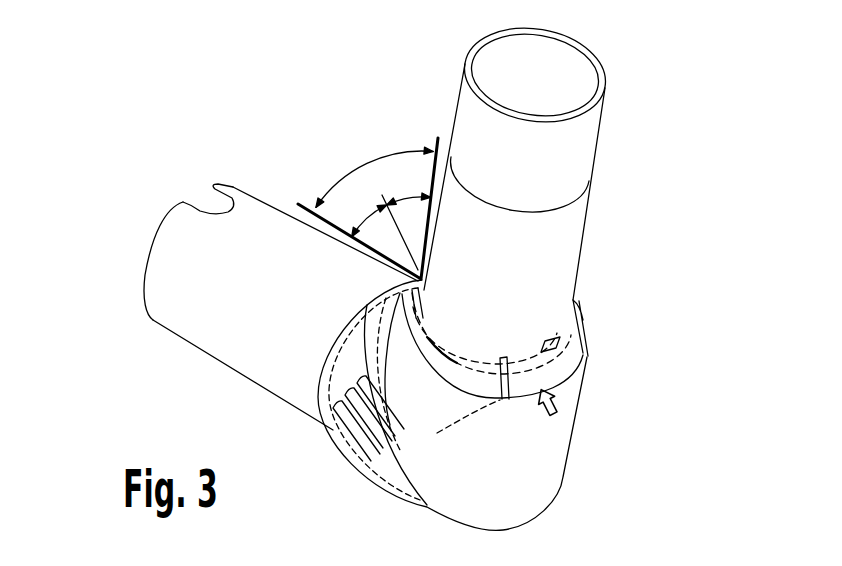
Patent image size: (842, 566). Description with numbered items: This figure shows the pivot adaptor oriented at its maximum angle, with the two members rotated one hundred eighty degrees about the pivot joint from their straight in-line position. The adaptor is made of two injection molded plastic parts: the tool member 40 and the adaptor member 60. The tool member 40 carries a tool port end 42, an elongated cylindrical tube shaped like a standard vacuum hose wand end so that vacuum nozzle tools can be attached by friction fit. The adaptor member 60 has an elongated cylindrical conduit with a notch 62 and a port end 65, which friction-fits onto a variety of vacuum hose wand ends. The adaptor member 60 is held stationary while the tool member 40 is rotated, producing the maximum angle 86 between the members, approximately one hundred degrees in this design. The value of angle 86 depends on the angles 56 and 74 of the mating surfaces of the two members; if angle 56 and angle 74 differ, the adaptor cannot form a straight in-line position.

The tool member 40 is at (672, 177).
The tool port end 42 is at (602, 63).
The angle 56 is at (408, 199).
The adaptor member 60 is at (220, 257).
The notch 62 is at (199, 208).
The port end 65 is at (148, 252).
The angle 74 is at (383, 213).
The angle 86 is at (367, 160).